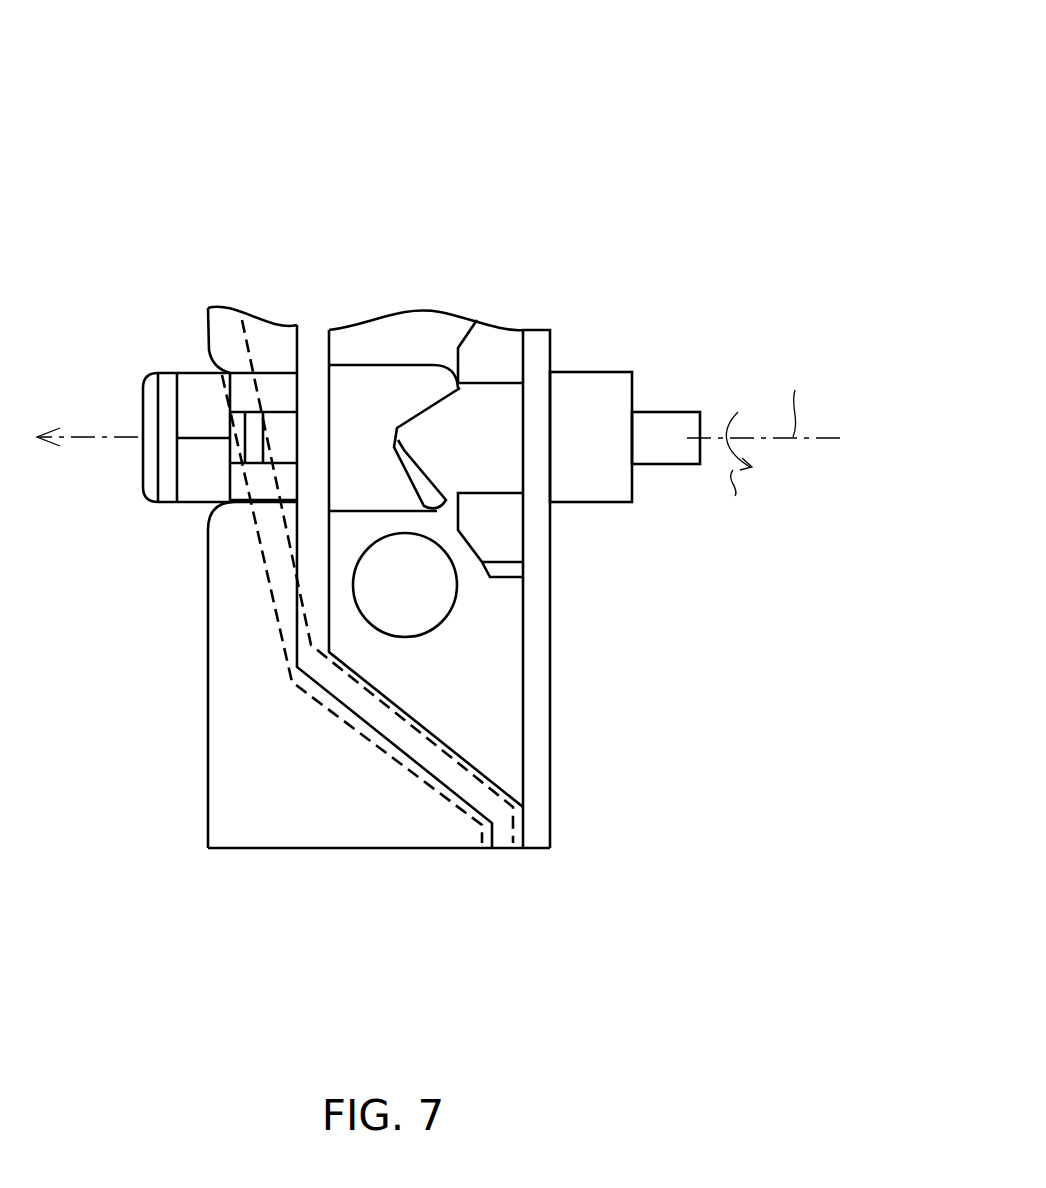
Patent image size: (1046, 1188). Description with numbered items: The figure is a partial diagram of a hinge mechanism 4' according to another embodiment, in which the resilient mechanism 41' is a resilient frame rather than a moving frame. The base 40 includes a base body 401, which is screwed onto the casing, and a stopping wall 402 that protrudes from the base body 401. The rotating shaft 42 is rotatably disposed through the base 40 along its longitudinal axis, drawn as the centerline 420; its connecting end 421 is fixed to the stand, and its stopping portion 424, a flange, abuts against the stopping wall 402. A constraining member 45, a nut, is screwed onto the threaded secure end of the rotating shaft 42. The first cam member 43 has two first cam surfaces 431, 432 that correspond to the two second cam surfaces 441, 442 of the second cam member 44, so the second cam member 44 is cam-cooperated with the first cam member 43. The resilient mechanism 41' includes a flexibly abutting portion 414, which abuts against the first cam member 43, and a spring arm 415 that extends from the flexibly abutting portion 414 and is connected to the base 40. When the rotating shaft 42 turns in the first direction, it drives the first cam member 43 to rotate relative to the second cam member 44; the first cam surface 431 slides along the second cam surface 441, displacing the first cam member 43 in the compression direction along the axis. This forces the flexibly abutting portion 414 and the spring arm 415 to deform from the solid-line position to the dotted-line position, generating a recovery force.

The hinge mechanism 4' is at (462, 500).
The base 40 is at (563, 930).
The base body 401 is at (462, 832).
The stopping wall 402 is at (538, 832).
The first cam member 43 is at (368, 375).
The first cam surface 431 is at (428, 398).
The first cam surface 432 is at (403, 490).
The second cam member 44 is at (507, 348).
The second cam surface 441 is at (460, 403).
The second cam surface 442 is at (418, 475).
The rotating shaft 42 is at (660, 480).
The stopping portion 424 is at (595, 385).
The connecting end 421 is at (663, 428).
The axis 420 is at (787, 438).
The constraining member 45 is at (167, 410).
The resilient mechanism 41' is at (303, 581).
The flexibly abutting portion 414 is at (307, 618).
The spring arm 415 is at (352, 688).